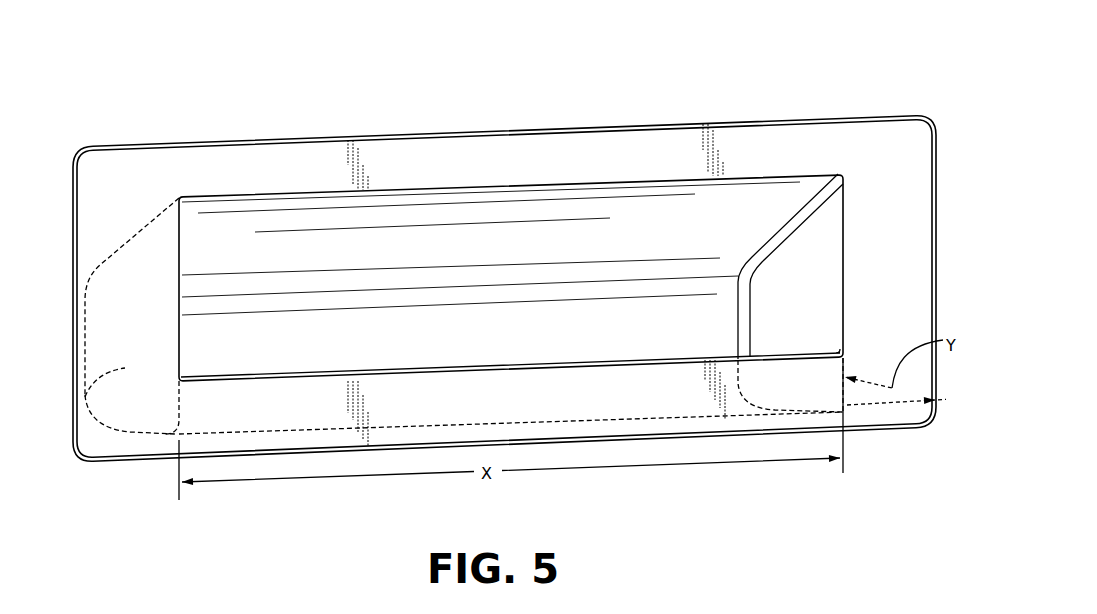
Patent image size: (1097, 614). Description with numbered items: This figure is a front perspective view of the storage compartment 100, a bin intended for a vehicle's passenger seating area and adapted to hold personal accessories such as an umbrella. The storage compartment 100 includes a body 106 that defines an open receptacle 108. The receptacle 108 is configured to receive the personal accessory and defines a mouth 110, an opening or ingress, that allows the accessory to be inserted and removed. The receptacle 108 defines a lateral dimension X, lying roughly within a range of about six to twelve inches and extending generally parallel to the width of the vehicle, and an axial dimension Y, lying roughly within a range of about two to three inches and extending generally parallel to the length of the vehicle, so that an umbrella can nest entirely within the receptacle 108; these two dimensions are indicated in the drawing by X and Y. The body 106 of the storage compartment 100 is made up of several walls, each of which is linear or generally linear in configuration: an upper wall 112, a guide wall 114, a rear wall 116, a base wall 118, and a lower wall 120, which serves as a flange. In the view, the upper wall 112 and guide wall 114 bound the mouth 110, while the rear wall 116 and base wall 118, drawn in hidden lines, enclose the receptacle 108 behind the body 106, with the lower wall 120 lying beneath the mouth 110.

The storage compartment 100 is at (568, 84).
The body 106 is at (693, 118).
The receptacle 108 is at (86, 397).
The mouth 110 is at (416, 188).
The upper wall 112 is at (797, 150).
The guide wall 114 is at (270, 262).
The rear wall 116 is at (88, 330).
The base wall 118 is at (112, 418).
The lower wall 120 is at (264, 407).